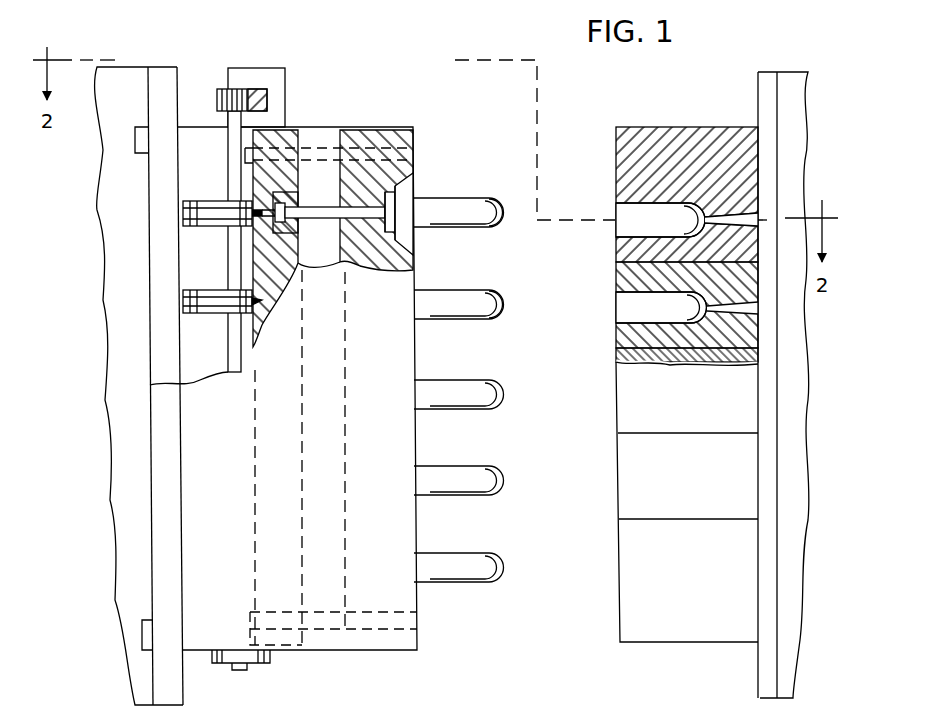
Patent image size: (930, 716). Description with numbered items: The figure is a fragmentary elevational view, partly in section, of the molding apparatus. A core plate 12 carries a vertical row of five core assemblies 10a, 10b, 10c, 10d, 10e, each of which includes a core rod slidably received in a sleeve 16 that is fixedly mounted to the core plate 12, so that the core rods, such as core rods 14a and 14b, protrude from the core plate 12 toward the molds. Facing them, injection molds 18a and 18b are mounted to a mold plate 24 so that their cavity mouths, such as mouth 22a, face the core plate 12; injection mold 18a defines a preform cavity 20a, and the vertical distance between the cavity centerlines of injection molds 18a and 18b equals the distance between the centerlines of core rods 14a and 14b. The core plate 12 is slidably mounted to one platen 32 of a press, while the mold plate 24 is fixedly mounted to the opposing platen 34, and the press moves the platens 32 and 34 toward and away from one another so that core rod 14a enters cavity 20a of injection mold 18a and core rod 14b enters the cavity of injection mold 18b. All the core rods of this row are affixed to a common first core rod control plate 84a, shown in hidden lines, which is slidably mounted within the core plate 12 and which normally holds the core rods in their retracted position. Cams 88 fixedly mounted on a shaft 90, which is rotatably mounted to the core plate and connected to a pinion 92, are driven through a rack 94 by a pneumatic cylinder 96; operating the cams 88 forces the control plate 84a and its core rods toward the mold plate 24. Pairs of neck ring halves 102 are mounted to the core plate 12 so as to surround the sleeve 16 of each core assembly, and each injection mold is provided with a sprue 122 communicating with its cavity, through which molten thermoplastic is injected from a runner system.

The core assembly 10a is at (438, 198).
The heater pin 10b is at (443, 290).
The heater pin 10c is at (440, 379).
The heater pin 10d is at (437, 465).
The heater pin 10e is at (437, 552).
The core plate 12 is at (362, 127).
The core rod 14a is at (491, 200).
The core rod 14b is at (491, 321).
The sleeve 16 is at (367, 205).
The injection mold 18a is at (616, 145).
The injection mold 18b is at (616, 275).
The preform cavity 20a is at (690, 103).
The mold cavity 22a is at (616, 213).
The mold plate 24 is at (765, 88).
The platen 32 is at (139, 365).
The opposing platen 34 is at (782, 90).
The first core rod control plate 84a is at (285, 585).
The cam 88 is at (205, 290).
The shaft 90 is at (232, 145).
The pinion 92 is at (216, 92).
The rack 94 is at (267, 97).
The pneumatic cylinder 96 is at (262, 68).
The neck ring halves 102 is at (405, 190).
The sprue 122 is at (735, 213).